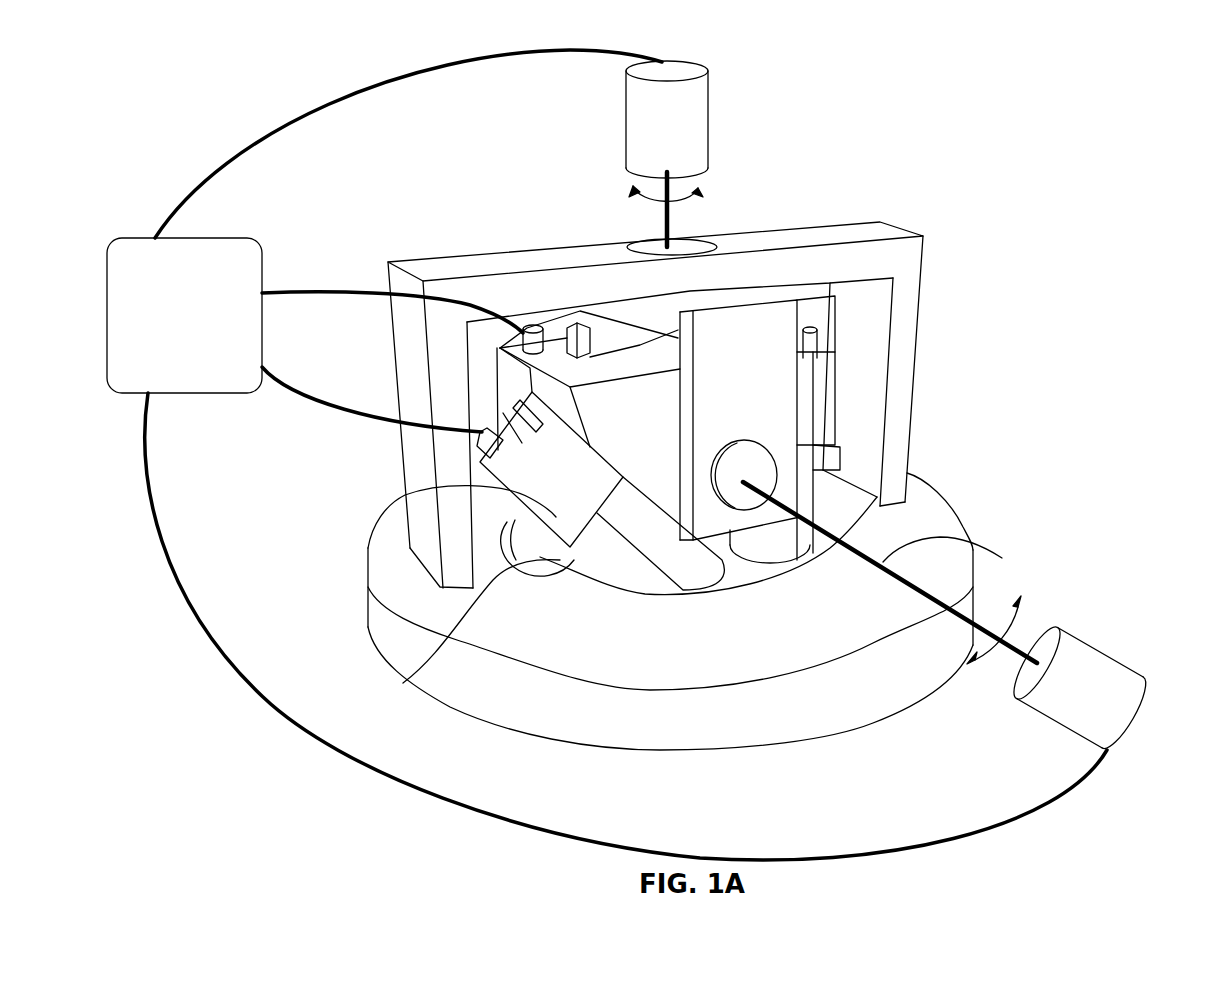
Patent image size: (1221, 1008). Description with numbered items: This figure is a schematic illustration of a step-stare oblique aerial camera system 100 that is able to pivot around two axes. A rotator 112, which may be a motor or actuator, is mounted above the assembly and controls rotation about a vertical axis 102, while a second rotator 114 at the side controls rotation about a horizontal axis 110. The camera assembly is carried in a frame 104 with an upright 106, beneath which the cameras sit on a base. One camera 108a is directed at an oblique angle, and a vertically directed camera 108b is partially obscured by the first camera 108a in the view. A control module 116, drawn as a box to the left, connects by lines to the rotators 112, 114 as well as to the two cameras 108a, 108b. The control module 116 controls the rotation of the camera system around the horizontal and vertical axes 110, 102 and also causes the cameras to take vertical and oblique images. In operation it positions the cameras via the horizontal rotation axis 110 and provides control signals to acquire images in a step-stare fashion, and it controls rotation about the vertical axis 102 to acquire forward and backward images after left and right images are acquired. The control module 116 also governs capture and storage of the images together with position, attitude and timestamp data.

The positioning system 100 is at (1168, 172).
The vertical axis 102 is at (672, 228).
The frame 104 is at (888, 227).
The frame upright 106 is at (916, 345).
The oblique camera 108a is at (381, 510).
The vertically directed camera 108b is at (403, 680).
The horizontal axis 110 is at (983, 557).
The rotator 112 is at (708, 132).
The rotator 114 is at (1085, 646).
The control module 116 is at (132, 238).